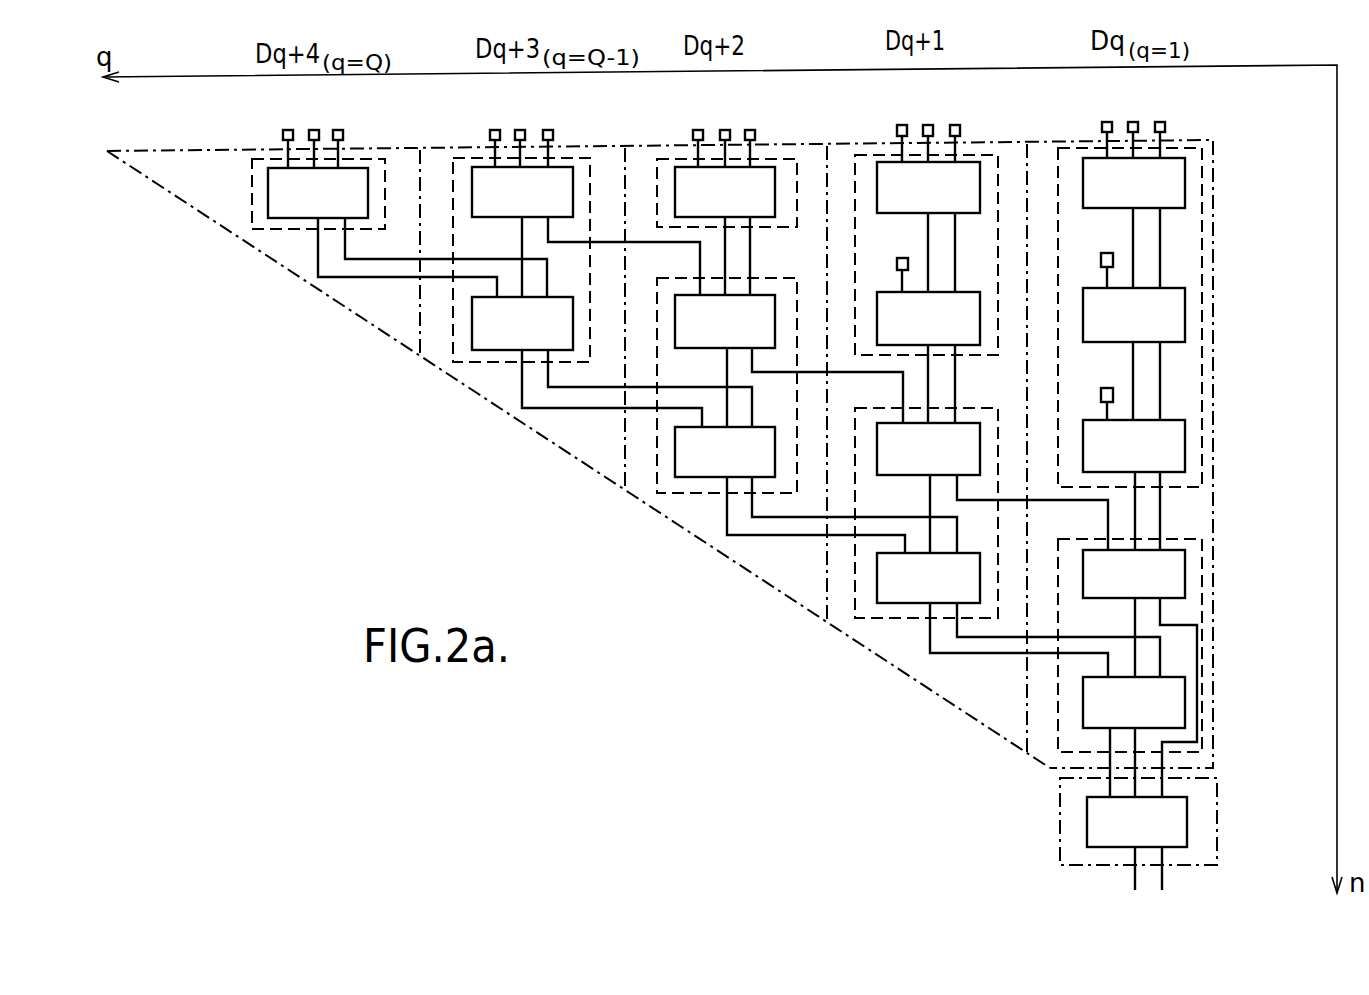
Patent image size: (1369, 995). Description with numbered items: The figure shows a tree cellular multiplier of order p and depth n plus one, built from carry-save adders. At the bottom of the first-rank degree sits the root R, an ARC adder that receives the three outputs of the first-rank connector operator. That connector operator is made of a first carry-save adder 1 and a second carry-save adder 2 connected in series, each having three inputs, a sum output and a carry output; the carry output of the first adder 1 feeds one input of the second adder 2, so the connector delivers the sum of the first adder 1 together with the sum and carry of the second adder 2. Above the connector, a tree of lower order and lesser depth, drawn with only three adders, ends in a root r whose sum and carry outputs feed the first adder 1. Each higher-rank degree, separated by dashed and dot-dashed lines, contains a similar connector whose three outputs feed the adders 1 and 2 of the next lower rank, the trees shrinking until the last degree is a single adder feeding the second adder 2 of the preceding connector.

The first carry-save adder 1 is at (508, 210).
The second carry-save adder 2 is at (558, 305).
The root of tree A(p-1,n-2) r is at (1160, 435).
The root R is at (1217, 816).